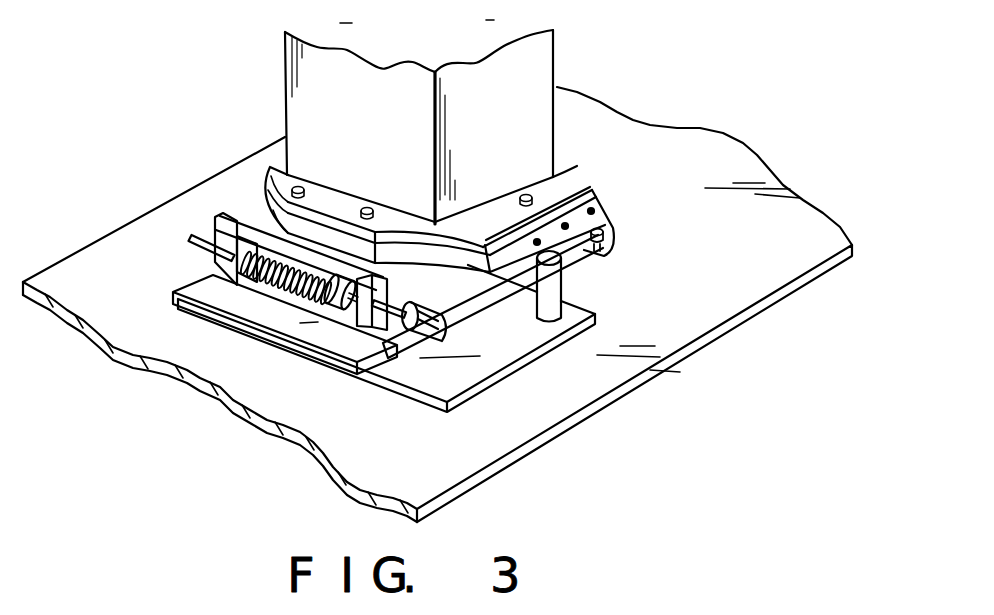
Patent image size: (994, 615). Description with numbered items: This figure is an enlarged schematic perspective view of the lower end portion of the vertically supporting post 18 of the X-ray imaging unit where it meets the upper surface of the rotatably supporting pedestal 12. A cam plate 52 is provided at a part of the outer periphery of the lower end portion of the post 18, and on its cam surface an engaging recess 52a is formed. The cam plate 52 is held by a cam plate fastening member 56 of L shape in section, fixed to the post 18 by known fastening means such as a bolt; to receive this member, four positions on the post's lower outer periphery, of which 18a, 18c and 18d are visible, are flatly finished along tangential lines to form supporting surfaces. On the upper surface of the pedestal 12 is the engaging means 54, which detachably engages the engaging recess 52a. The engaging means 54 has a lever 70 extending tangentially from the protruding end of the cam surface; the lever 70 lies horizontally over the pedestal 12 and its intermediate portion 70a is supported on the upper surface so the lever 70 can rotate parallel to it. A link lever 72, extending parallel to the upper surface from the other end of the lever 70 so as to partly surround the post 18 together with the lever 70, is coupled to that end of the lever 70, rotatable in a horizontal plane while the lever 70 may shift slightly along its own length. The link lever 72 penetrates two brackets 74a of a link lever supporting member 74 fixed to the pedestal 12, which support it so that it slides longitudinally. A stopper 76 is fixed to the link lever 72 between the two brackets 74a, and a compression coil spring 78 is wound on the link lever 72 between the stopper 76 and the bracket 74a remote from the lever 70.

The rotatably supporting pedestal 12 is at (667, 328).
The vertically supporting post 18 is at (547, 67).
The flatly finished position 18a is at (572, 197).
The flatly finished position 18c is at (270, 170).
The flatly finished position 18d is at (333, 230).
The cam plate 52 is at (624, 204).
The engaging recess 52a is at (605, 236).
The engaging means 54 is at (426, 380).
The cam plate fastening member 56 is at (590, 188).
The lever 70 is at (507, 300).
The intermediate portion 70a is at (562, 266).
The link lever 72 is at (381, 347).
The link lever supporting member 74 is at (213, 275).
The bracket 74a is at (236, 262).
The stopper 76 is at (340, 312).
The compression coil spring 78 is at (268, 280).